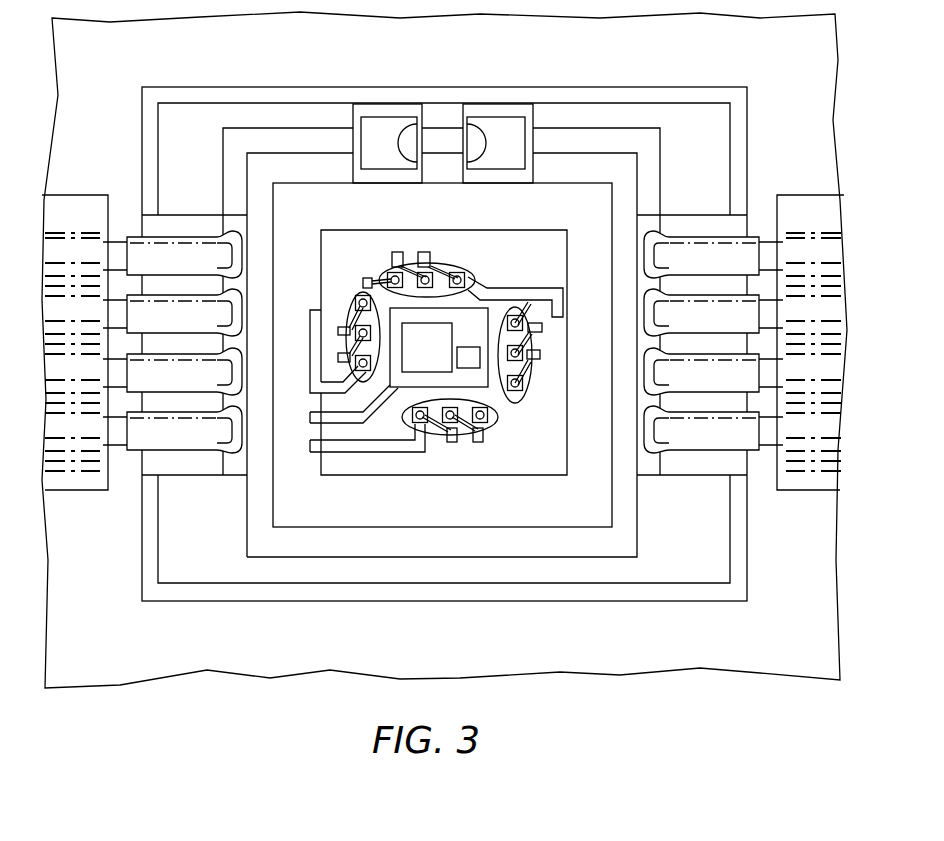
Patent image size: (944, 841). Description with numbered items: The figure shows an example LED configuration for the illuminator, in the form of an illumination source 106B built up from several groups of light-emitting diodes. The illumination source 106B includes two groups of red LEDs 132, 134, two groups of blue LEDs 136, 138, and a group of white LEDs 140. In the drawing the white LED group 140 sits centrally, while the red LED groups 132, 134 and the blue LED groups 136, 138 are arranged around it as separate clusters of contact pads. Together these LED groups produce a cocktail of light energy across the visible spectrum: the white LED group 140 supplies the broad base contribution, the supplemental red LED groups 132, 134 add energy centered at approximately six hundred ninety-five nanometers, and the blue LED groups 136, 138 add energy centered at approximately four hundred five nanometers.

The illumination source 106B is at (548, 229).
The red LED group 132 is at (497, 420).
The red LED group 134 is at (533, 375).
The blue LED group 136 is at (342, 310).
The blue LED group 138 is at (450, 263).
The white LED group 140 is at (412, 352).